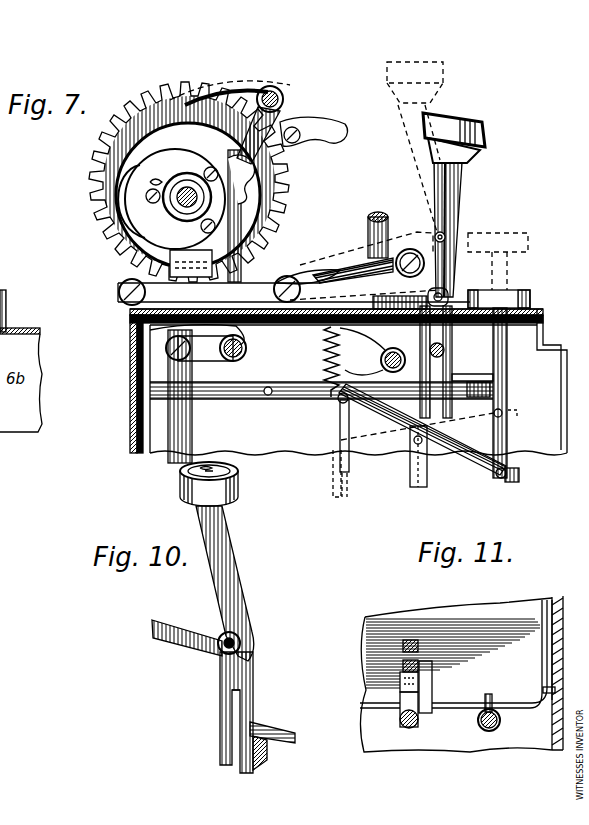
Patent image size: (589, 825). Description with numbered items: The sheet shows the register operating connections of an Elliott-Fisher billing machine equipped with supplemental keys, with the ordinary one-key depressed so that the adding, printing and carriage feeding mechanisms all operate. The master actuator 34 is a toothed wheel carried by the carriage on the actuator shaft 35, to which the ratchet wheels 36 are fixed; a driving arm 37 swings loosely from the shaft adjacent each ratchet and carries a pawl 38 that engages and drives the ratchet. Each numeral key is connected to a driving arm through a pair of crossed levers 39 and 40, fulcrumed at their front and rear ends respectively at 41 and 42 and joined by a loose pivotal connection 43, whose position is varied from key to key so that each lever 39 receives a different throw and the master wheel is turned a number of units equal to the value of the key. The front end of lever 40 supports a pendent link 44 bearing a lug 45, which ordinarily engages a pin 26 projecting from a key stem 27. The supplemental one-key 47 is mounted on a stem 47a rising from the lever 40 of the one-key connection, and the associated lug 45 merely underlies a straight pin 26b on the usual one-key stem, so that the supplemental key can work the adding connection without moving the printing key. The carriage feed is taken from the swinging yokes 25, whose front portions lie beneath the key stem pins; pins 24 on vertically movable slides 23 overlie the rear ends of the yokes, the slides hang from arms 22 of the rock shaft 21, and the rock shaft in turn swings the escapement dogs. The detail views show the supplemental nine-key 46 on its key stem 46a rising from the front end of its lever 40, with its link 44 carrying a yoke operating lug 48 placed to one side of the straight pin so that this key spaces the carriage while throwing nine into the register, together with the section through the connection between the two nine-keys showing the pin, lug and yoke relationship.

In FIG. 7, the rock shaft 21 is at (247, 349).
In FIG. 7, the arms 22 is at (214, 362).
In FIG. 7, the slides 23 is at (192, 425).
In FIG. 7, the pins 24 is at (150, 382).
In FIG. 7, the swinging yokes 25 is at (305, 401).
In FIG. 11, the swinging yokes 25 is at (550, 648).
In FIG. 11, the pins 26 is at (495, 702).
In FIG. 7, the straight pin 26b is at (493, 373).
In FIG. 11, the straight pin 26b is at (410, 700).
In FIG. 11, the stems 27 is at (498, 725).
In FIG. 7, the master actuator 34 is at (296, 199).
In FIG. 7, the actuator shaft 35 is at (186, 186).
In FIG. 7, the ratchet wheels 36 is at (204, 228).
In FIG. 7, the driving arm 37 is at (240, 108).
In FIG. 7, the pawl 38 is at (213, 103).
In FIG. 7, the lever 39 is at (355, 273).
In FIG. 10, the lever 40 is at (183, 645).
In FIG. 7, the fulcrum 41 is at (410, 249).
In FIG. 7, the fulcrum 42 is at (120, 298).
In FIG. 7, the pivotal connection 43 is at (285, 281).
In FIG. 7, the link 44 is at (452, 300).
In FIG. 10, the link 44 is at (250, 683).
In FIG. 11, the link 44 is at (407, 663).
In FIG. 7, the lug 45 is at (490, 389).
In FIG. 10, the lug 45 is at (250, 745).
In FIG. 11, the lug 45 is at (400, 673).
In FIG. 10, the supplemental 9-key 46 is at (240, 493).
In FIG. 10, the key stem 46a is at (223, 567).
In FIG. 7, the supplemental 1-key 47 is at (468, 123).
In FIG. 7, the stem 47a is at (457, 197).
In FIG. 10, the yoke operating lug 48 is at (290, 730).
In FIG. 11, the yoke operating lug 48 is at (432, 702).